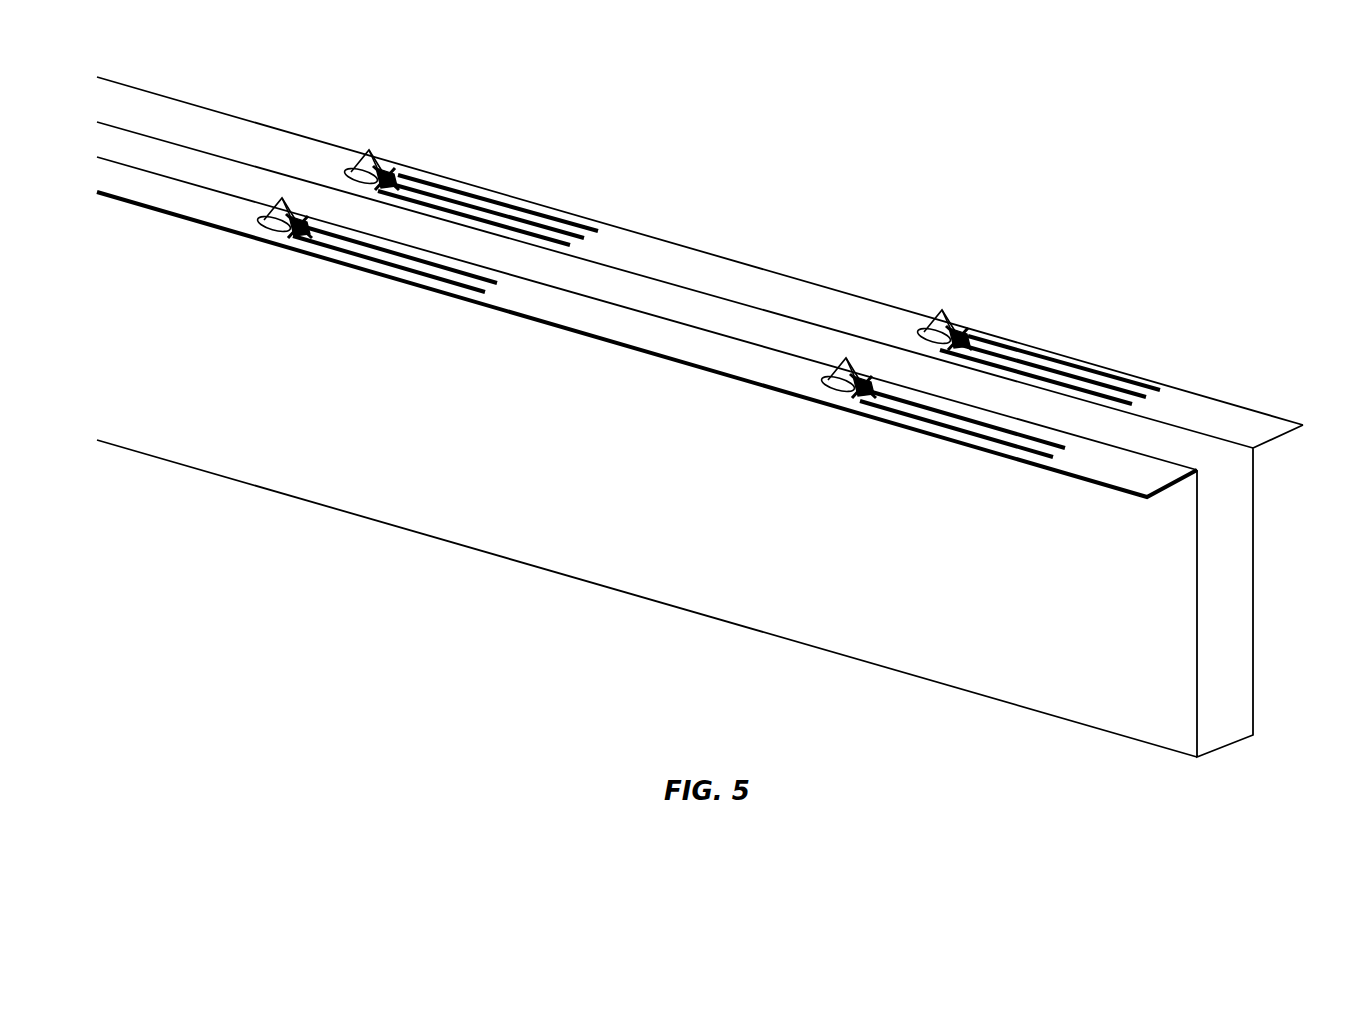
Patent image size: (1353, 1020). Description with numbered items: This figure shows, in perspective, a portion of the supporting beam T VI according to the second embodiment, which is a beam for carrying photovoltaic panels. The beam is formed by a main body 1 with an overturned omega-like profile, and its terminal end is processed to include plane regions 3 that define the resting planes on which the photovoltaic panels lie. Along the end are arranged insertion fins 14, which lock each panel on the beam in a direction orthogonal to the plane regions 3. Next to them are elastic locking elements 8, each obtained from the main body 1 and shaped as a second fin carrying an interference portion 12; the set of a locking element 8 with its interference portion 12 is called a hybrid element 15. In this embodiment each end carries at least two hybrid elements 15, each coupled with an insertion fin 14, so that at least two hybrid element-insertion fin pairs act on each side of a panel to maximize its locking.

The main body 1 is at (998, 657).
The plane regions 3 is at (646, 338).
The locking elastic element 8 is at (463, 266).
The interference portion 12 is at (402, 172).
The insertion fins 14 is at (591, 235).
The hybrid element 15 is at (742, 274).
The beam VI is at (270, 598).